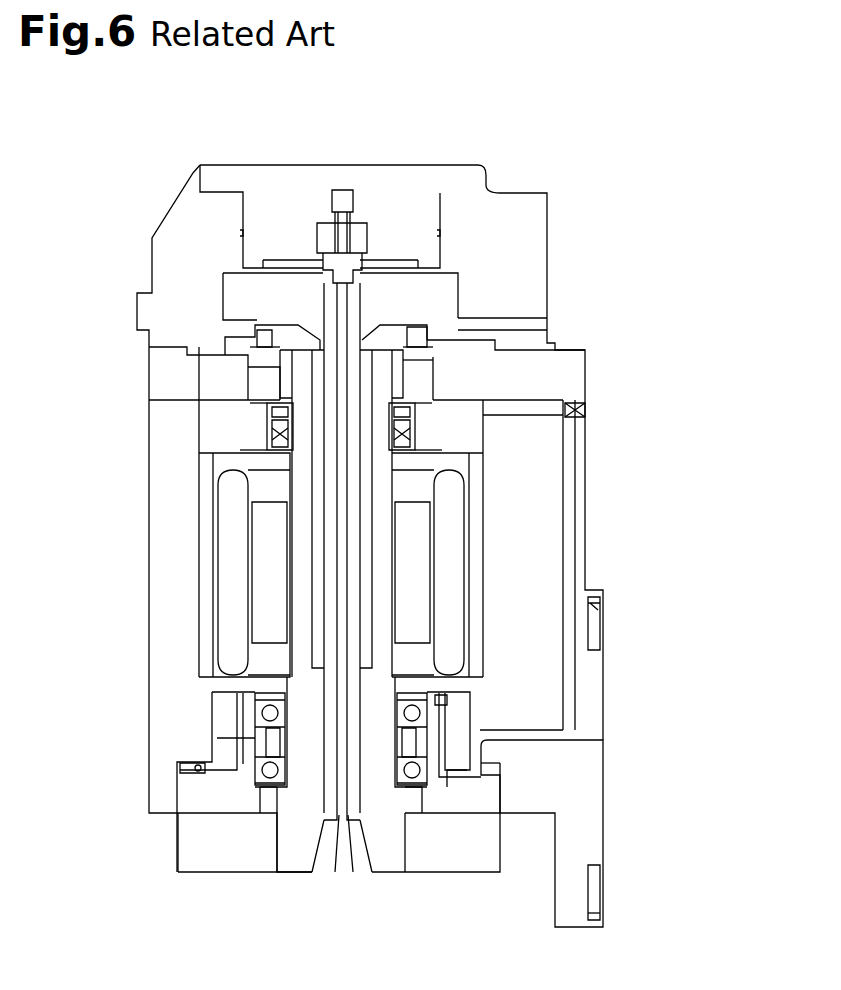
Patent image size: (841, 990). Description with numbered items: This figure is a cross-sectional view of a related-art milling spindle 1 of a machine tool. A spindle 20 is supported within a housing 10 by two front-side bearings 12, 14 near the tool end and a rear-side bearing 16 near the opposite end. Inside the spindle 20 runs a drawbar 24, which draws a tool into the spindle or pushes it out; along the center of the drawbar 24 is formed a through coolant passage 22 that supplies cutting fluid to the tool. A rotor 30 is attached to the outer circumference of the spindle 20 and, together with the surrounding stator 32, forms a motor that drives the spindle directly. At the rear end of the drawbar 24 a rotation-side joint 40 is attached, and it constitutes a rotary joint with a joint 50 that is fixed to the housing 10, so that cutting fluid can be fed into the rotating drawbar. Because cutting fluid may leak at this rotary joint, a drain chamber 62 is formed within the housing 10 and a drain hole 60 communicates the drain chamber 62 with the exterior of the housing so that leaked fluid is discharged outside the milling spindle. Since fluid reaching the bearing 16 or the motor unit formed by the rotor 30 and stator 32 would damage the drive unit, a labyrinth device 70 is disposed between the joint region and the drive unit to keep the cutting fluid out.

The milling spindle 1 is at (704, 250).
The housing 10 is at (168, 568).
The front-side bearing 12 is at (252, 777).
The front-side bearing 14 is at (252, 710).
The rear-side bearing 16 is at (264, 432).
The spindle 20 is at (298, 853).
The through coolant passage 22 is at (340, 848).
The drawbar 24 is at (352, 845).
The rotor 30 is at (413, 583).
The stator 32 is at (452, 537).
The rotation-side joint 40 is at (360, 256).
The joint 50 is at (358, 237).
The drain hole 60 is at (538, 323).
The drain chamber 62 is at (437, 290).
The labyrinth device 70 is at (257, 338).